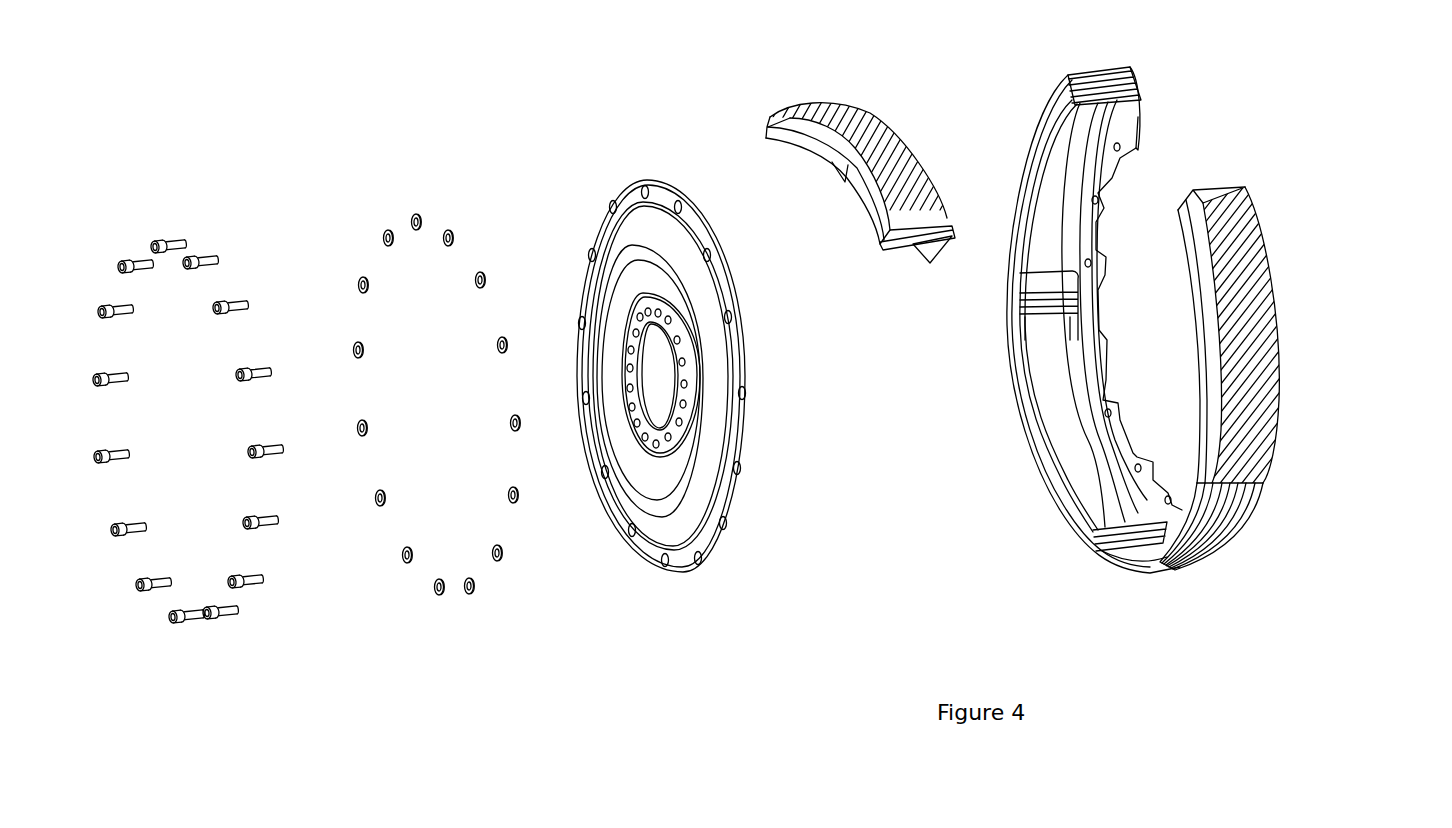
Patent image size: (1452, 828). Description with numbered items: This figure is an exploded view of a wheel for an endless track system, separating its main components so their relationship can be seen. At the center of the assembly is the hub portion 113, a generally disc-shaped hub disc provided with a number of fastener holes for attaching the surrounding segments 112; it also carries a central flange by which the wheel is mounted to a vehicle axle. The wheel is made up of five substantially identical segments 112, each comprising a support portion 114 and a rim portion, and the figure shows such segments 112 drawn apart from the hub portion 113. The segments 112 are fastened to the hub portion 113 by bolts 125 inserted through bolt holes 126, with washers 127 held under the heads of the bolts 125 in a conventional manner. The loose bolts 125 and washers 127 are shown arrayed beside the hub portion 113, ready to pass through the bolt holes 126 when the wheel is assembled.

The segment 112 is at (913, 119).
The hub portion 113 is at (727, 434).
The support portion 114 is at (1068, 146).
The bolt 125 is at (217, 236).
The bolt hole 126 is at (750, 406).
The washer 127 is at (468, 228).